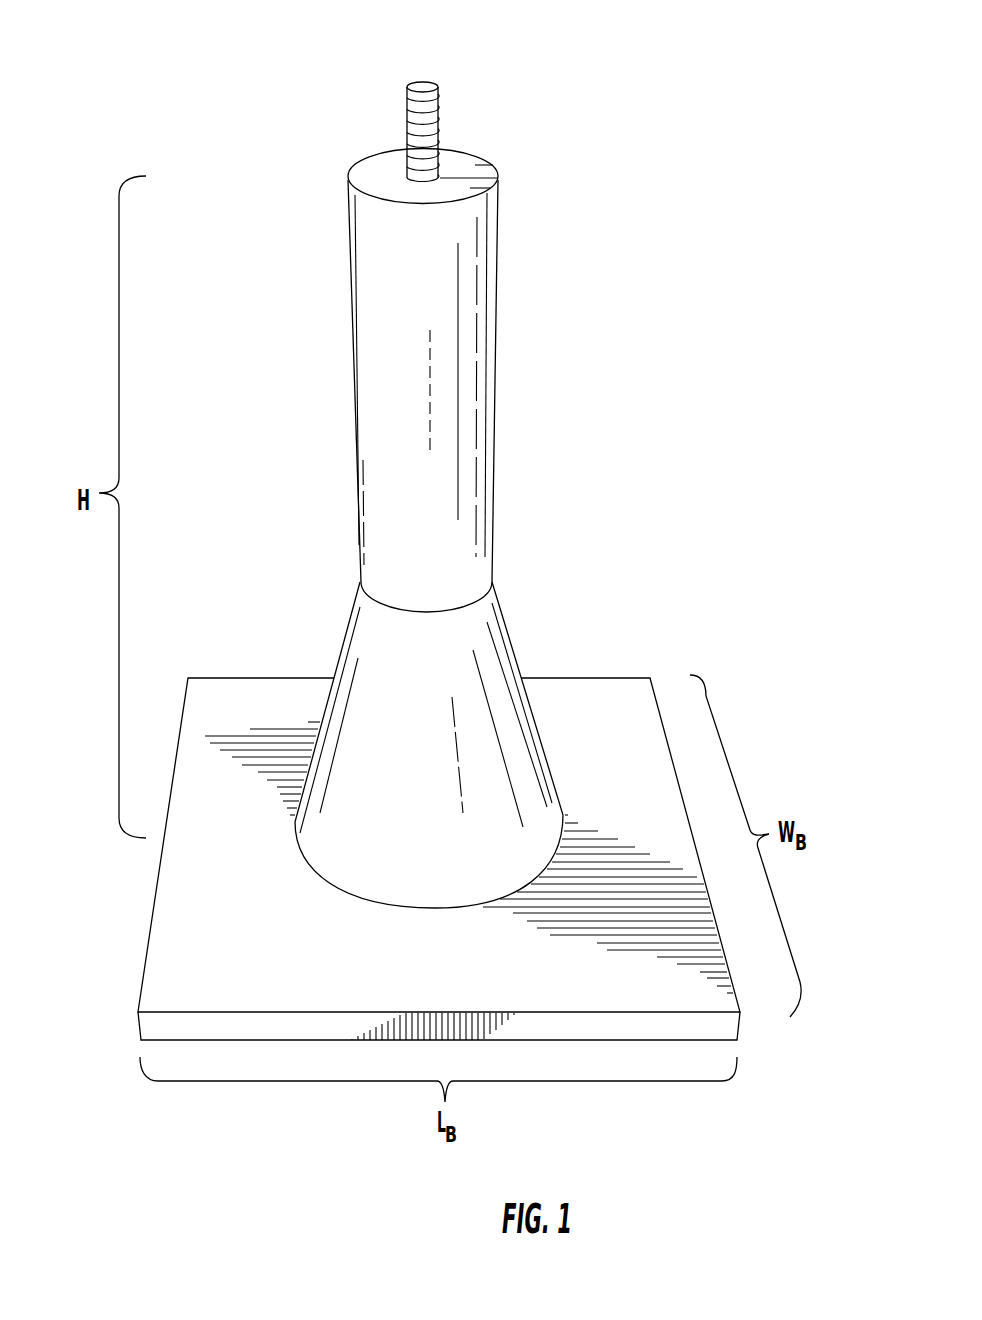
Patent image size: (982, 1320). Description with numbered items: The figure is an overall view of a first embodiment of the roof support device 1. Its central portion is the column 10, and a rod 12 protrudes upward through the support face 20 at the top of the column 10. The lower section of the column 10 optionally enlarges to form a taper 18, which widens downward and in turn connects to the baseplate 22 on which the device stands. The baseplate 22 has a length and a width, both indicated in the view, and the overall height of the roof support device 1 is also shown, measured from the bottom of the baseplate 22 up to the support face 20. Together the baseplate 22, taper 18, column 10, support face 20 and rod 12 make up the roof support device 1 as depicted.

The roof support device 1 is at (592, 171).
The column 10 is at (495, 455).
The rod 12 is at (432, 130).
The taper 18 is at (512, 638).
The support face 20 is at (463, 166).
The baseplate 22 is at (197, 958).